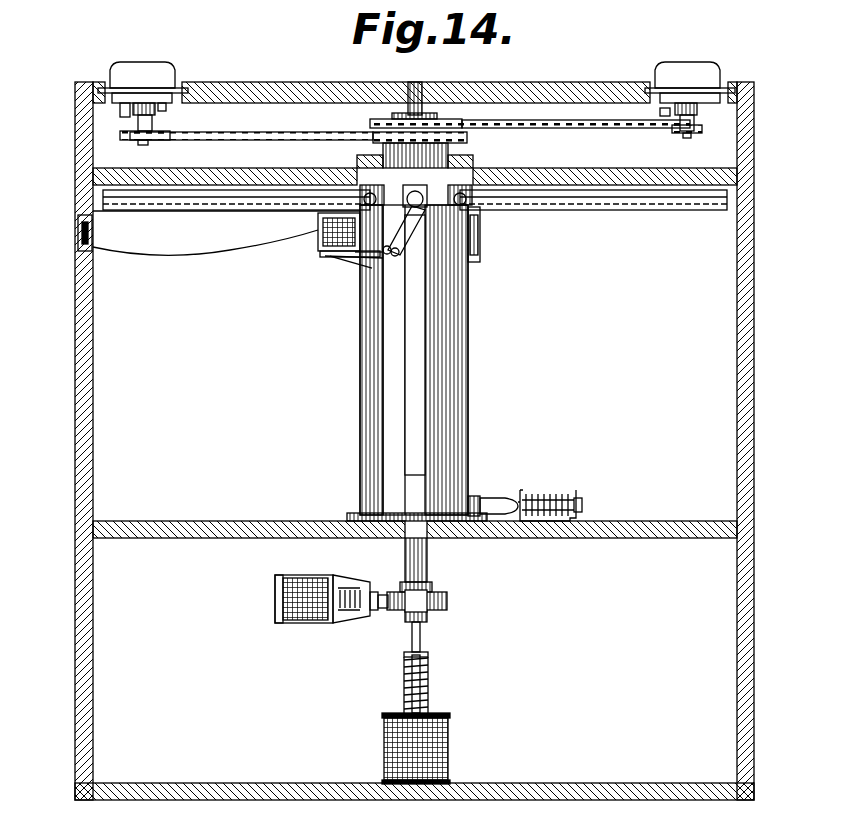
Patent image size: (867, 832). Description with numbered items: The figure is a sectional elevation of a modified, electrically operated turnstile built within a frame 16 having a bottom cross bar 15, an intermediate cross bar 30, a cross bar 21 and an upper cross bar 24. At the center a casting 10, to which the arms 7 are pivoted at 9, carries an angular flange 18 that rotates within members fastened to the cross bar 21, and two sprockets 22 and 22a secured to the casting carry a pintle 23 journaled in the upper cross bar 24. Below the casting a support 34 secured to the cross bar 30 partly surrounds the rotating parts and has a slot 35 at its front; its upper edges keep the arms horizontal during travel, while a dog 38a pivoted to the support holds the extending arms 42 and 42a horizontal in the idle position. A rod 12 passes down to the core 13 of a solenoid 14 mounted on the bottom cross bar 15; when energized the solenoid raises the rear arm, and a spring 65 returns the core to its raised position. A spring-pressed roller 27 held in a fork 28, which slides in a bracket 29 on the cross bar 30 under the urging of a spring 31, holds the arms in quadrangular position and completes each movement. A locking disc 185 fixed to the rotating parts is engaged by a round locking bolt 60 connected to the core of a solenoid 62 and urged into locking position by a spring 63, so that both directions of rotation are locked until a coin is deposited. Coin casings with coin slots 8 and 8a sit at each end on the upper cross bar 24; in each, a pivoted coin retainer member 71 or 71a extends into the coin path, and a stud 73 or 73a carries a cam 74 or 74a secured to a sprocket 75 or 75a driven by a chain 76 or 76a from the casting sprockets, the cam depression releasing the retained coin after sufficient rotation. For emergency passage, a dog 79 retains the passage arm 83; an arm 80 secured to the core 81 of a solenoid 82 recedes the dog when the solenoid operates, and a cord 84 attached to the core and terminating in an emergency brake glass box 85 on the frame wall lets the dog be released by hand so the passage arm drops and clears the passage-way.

The arms 7 is at (250, 212).
The coin slot 8 is at (133, 70).
The coin slot 8a is at (690, 72).
The pivot 9 is at (475, 192).
The casting 10 is at (416, 186).
The rod 12 is at (421, 636).
The core 13 is at (428, 696).
The solenoid 14 is at (450, 746).
The bottom cross bar 15 is at (535, 786).
The frame 16 is at (755, 403).
The angular flange 18 is at (370, 158).
The cross bar 21 is at (596, 178).
The sprocket 22 is at (467, 137).
The sprocket 22a is at (370, 122).
The pintle 23 is at (422, 92).
The upper cross bar 24 is at (558, 96).
The roller 27 is at (474, 496).
The fork 28 is at (497, 500).
The bracket 29 is at (578, 496).
The cross bar 30 is at (622, 540).
The spring 31 is at (548, 494).
The support 34 is at (468, 344).
The slot 35 is at (420, 396).
The dog 38a is at (480, 232).
The extending arm 42 is at (188, 203).
The extending arm 42a is at (624, 204).
The locking bolt 60 is at (383, 594).
The solenoid 62 is at (296, 624).
The spring 63 is at (352, 614).
The spring 65 is at (430, 676).
The pivoted coin retainer member 71 is at (125, 115).
The pivoted coin retainer member 71a is at (700, 112).
The stud 73 is at (150, 100).
The stud 73a is at (692, 110).
The cam 74 is at (160, 116).
The cam 74a is at (676, 132).
The sprocket 75 is at (132, 138).
The sprocket 75a is at (700, 130).
The chain 76 is at (268, 126).
The chain 76a is at (582, 128).
The dog 79 is at (415, 225).
The arm 80 is at (383, 252).
The core 81 is at (340, 258).
The solenoid 82 is at (318, 240).
The passage arm 83 is at (418, 206).
The cord 84 is at (200, 252).
The emergency brake glass box 85 is at (78, 236).
The locking disc 185 is at (447, 601).